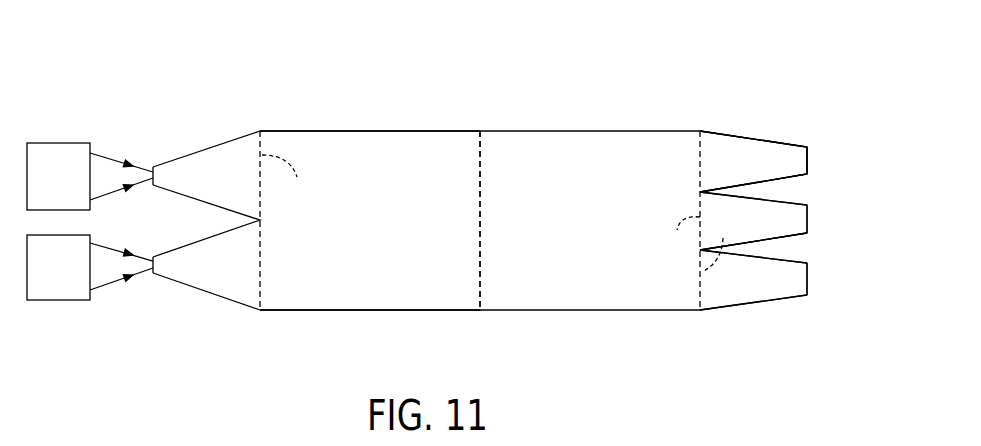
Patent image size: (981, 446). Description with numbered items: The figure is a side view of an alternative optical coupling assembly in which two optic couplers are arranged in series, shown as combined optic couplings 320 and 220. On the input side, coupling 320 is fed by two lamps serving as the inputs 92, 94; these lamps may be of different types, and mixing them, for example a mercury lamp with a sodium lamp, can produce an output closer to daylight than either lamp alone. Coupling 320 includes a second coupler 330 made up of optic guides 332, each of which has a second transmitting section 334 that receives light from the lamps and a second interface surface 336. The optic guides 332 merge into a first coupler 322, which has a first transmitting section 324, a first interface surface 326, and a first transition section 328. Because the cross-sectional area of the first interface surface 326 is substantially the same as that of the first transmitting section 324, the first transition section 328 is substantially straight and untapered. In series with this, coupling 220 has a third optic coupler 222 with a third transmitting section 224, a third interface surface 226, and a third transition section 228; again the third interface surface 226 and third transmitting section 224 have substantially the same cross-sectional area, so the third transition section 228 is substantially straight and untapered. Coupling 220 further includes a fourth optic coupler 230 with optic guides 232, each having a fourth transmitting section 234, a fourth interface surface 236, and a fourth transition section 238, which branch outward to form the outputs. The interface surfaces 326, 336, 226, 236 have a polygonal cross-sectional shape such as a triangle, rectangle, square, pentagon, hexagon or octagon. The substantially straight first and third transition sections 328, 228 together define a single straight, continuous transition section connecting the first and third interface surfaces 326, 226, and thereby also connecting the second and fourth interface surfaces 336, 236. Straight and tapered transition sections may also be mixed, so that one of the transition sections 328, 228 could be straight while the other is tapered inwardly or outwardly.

The input 92 is at (57, 282).
The input 94 is at (57, 162).
The optic coupling 220 is at (765, 85).
The third optic coupler 222 is at (580, 312).
The third transmitting section 224 is at (480, 227).
The third interface surface 226 is at (719, 242).
The third transition section 228 is at (570, 130).
The fourth optic coupler 230 is at (788, 140).
The optic guides 232 is at (733, 132).
The fourth transmitting section 234 is at (808, 155).
The fourth interface surface 236 is at (681, 240).
The fourth transition section 238 is at (795, 200).
The optic coupling 320 is at (315, 103).
The first coupler 322 is at (390, 131).
The first transmitting section 324 is at (480, 207).
The first interface surface 326 is at (260, 193).
The first transition section 328 is at (335, 313).
The second coupler 330 is at (235, 313).
The optic guides 332 is at (188, 162).
The second transmitting section 334 is at (152, 167).
The second interface surface 336 is at (285, 180).